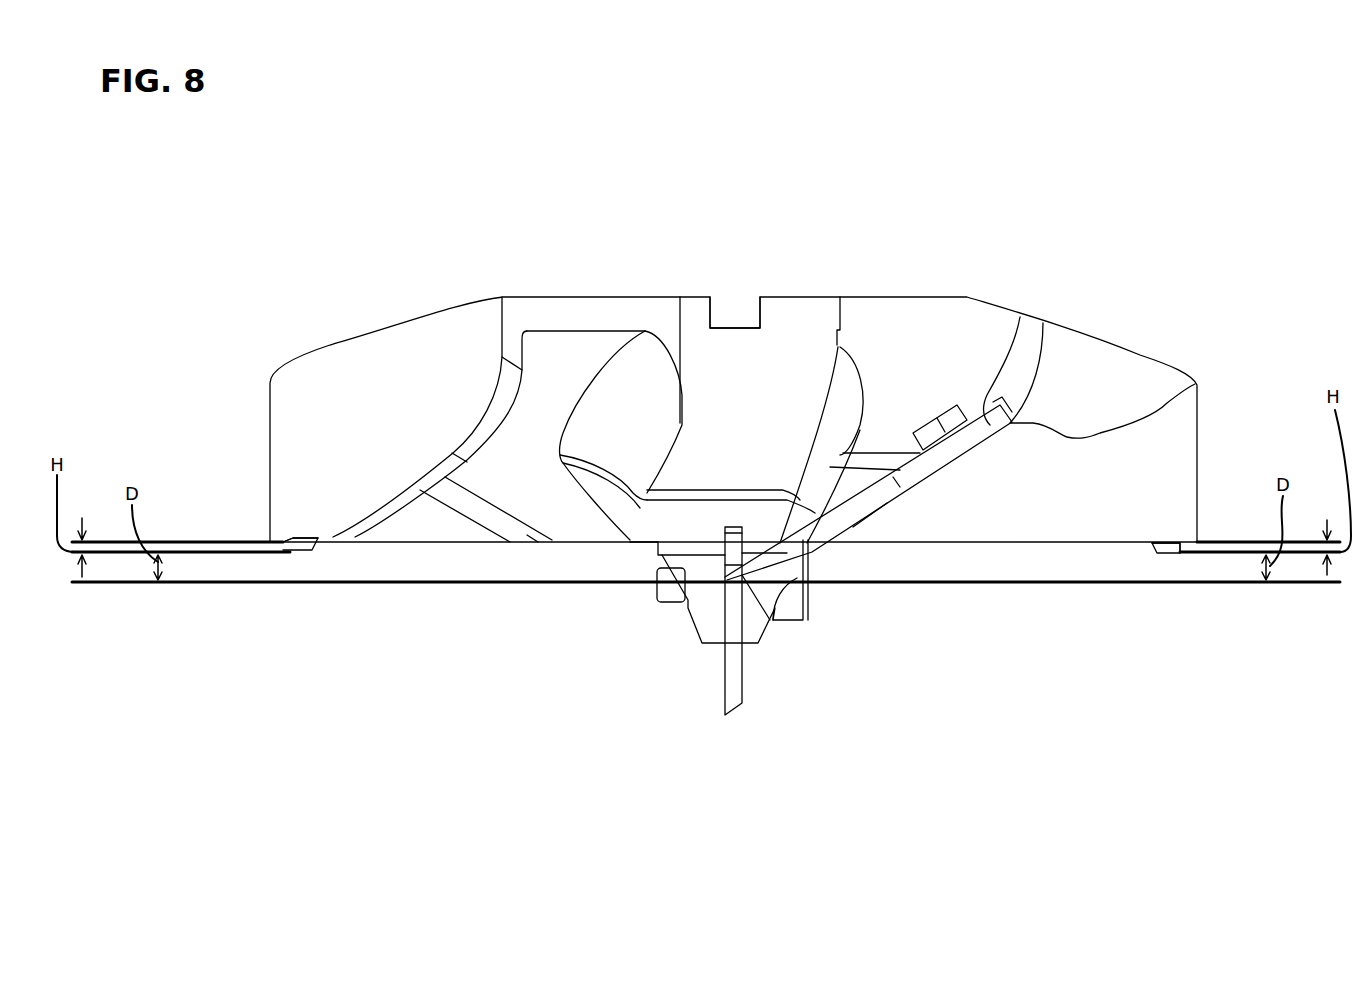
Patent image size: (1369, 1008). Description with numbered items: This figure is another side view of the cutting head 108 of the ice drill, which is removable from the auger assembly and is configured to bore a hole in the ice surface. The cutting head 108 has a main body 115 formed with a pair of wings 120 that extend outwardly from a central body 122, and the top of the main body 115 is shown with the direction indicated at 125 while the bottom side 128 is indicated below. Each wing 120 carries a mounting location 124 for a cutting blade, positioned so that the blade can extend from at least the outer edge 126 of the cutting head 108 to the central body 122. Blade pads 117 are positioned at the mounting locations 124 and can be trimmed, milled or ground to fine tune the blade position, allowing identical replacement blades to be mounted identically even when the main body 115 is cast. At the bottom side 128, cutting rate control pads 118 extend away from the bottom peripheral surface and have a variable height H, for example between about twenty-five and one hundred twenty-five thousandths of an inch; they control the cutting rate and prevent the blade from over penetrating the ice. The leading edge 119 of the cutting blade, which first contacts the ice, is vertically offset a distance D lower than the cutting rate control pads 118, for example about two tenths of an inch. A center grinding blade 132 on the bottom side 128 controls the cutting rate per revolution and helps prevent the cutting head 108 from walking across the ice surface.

The cutting head 108 is at (1083, 165).
The main body 115 is at (918, 305).
The blade pads 117 is at (992, 437).
The cutting rate control pads 118 is at (285, 548).
The leading edge 119 is at (728, 575).
The wings 120 is at (555, 355).
The central body 122 is at (775, 318).
The mounting location 124 is at (1015, 432).
The upward direction 125 is at (728, 205).
The outer edge 126 is at (270, 425).
The bottom side 128 is at (734, 762).
The center grinding blade 132 is at (732, 685).